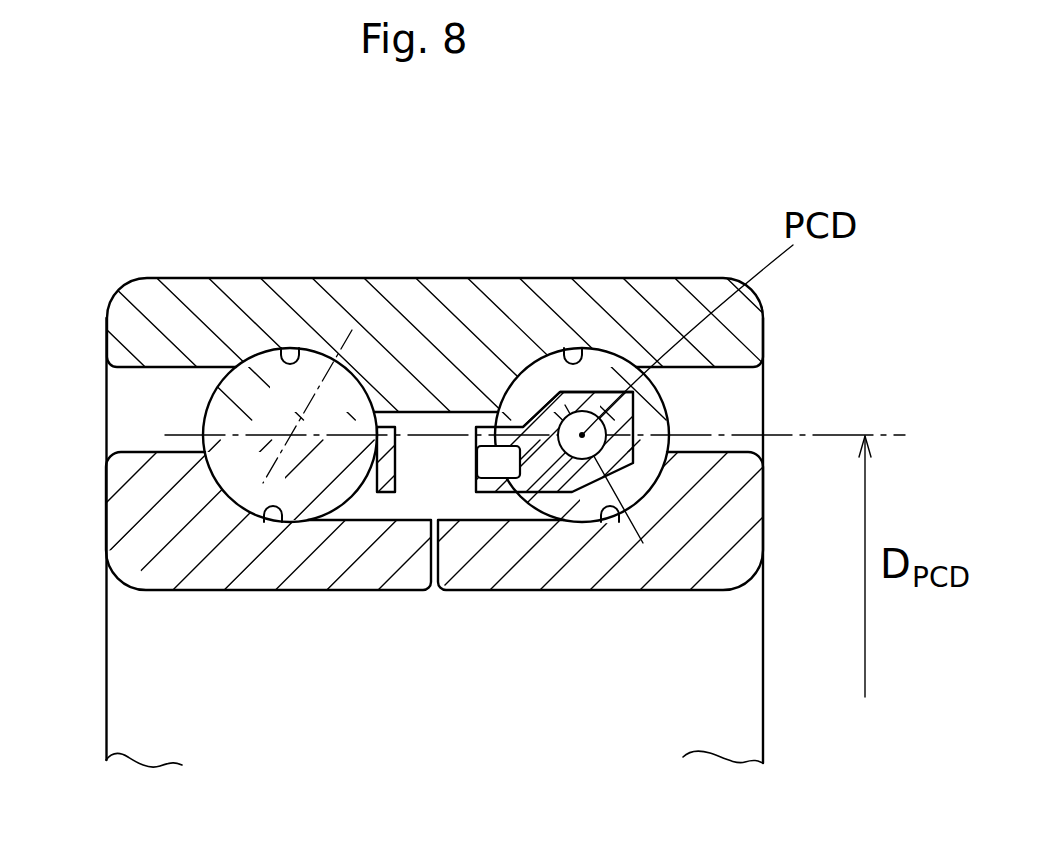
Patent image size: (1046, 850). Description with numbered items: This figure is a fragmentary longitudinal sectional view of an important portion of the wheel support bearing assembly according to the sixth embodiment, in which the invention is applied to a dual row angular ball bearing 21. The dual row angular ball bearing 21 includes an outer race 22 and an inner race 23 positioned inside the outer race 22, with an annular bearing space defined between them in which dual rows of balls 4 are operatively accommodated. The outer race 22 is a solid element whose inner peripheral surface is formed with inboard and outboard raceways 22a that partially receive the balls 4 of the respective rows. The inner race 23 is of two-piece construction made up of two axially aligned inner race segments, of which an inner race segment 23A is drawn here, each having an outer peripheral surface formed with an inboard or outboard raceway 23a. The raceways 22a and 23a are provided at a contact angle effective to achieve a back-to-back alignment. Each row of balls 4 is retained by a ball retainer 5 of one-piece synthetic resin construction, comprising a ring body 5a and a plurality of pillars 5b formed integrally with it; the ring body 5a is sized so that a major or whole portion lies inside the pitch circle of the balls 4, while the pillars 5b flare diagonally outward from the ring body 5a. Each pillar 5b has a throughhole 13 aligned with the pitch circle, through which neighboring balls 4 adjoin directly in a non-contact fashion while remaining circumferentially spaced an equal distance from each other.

The dual row angular ball bearing 21 is at (166, 264).
The outer race 22 is at (433, 315).
The raceways 22a is at (290, 352).
The balls 4 is at (273, 405).
The ball retainer 5 is at (391, 412).
The ring body 5a is at (513, 482).
The pillars 5b is at (615, 418).
The throughhole 13 is at (577, 452).
The inner race 23 is at (426, 778).
The inner race segment 23A is at (310, 570).
The raceway 23a is at (255, 490).